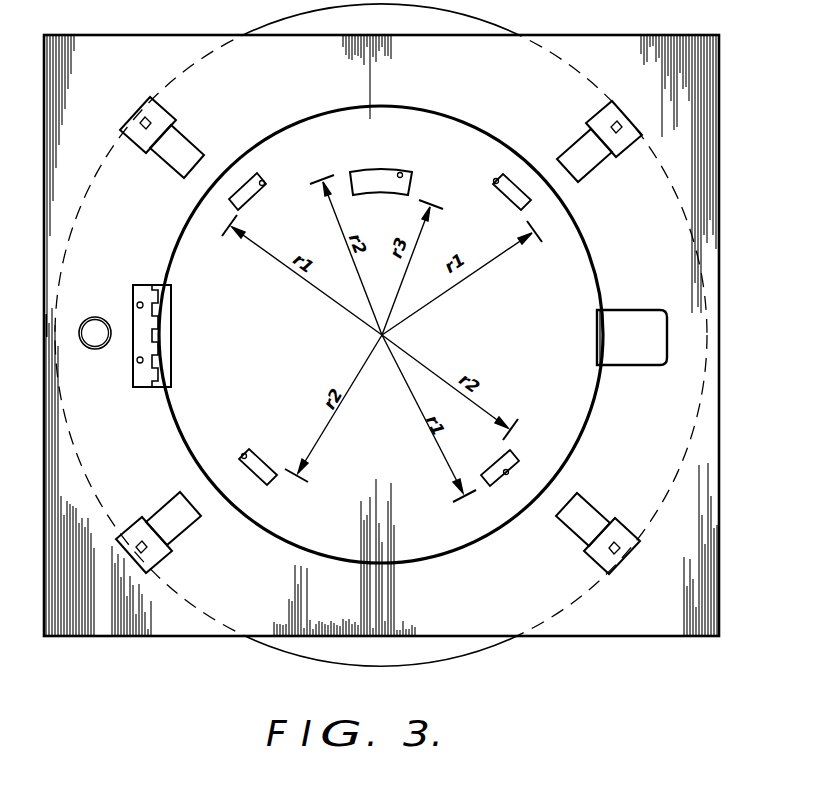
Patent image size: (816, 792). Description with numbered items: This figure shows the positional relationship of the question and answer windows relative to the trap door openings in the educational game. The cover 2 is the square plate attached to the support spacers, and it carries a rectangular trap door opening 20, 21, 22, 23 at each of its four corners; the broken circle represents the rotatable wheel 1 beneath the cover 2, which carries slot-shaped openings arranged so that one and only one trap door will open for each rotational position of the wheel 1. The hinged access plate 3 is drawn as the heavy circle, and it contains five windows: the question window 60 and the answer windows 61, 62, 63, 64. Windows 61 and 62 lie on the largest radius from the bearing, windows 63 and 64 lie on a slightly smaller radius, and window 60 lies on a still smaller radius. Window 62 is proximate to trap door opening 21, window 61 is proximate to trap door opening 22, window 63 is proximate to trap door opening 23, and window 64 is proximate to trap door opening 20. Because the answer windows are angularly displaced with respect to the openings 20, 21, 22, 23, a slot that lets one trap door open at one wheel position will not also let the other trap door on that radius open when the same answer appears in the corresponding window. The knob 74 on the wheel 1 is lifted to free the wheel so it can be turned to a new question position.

The rotatable wheel 1 is at (478, 647).
The cover 2 is at (721, 152).
The access plate 3 is at (578, 410).
The trap door opening 20 is at (587, 533).
The trap door opening 21 is at (594, 173).
The trap door opening 22 is at (175, 165).
The trap door opening 23 is at (170, 532).
The question window 60 is at (400, 175).
The answer window 61 is at (262, 183).
The answer window 62 is at (496, 181).
The answer window 63 is at (244, 456).
The answer window 64 is at (506, 472).
The knob 74 is at (98, 342).